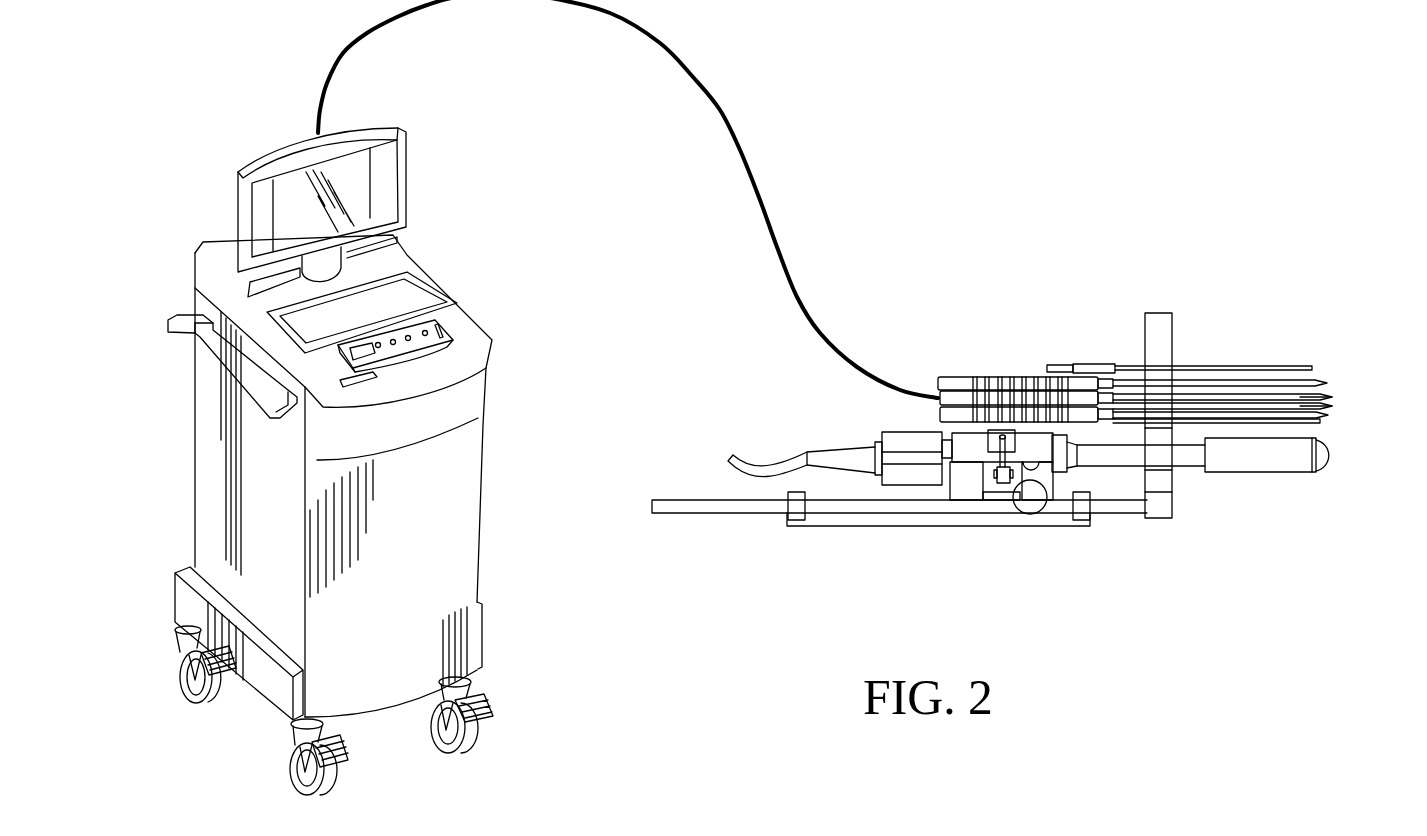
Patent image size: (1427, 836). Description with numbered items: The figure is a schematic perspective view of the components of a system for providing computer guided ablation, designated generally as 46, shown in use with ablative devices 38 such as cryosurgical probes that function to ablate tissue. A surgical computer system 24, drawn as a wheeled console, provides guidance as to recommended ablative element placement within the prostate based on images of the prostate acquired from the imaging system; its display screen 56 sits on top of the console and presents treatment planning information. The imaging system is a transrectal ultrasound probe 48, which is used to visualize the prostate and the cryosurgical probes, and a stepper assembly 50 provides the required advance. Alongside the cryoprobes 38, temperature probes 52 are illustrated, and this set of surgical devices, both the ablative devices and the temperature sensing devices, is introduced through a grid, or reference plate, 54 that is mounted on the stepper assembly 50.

The surgical computer system 24 is at (483, 526).
The ablative devices 38 is at (1300, 415).
The system for computer guided ablation 46 is at (583, 626).
The transrectal ultrasound probe 48 is at (1255, 463).
The stepper assembly 50 is at (1040, 530).
The temperature probes 52 is at (1260, 393).
The grid 54 is at (1160, 327).
The display screen 56 is at (361, 183).